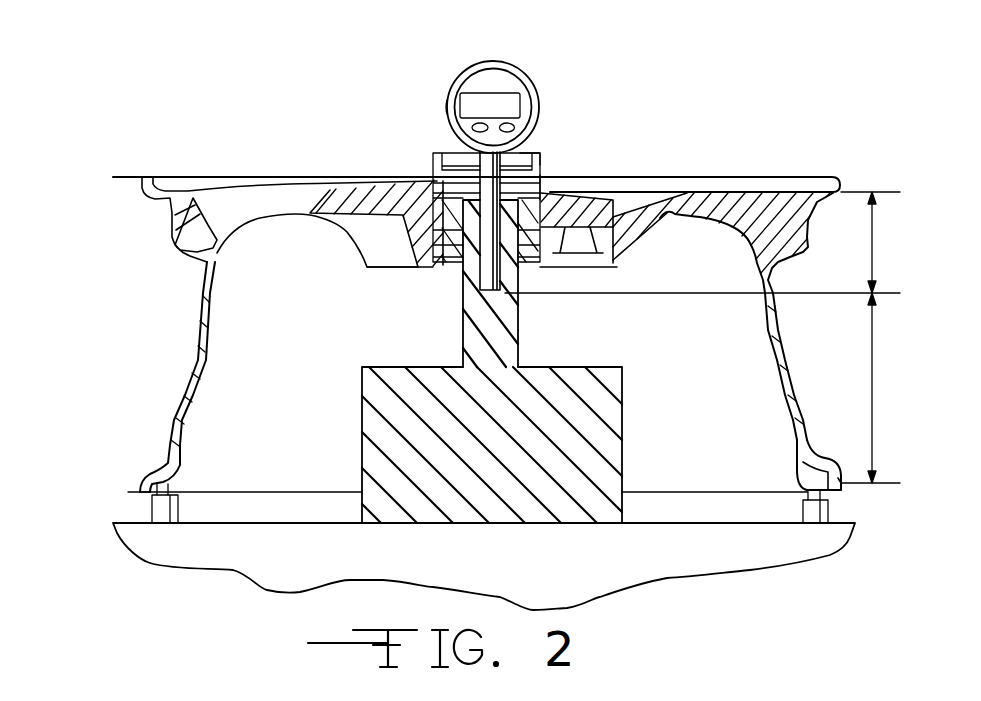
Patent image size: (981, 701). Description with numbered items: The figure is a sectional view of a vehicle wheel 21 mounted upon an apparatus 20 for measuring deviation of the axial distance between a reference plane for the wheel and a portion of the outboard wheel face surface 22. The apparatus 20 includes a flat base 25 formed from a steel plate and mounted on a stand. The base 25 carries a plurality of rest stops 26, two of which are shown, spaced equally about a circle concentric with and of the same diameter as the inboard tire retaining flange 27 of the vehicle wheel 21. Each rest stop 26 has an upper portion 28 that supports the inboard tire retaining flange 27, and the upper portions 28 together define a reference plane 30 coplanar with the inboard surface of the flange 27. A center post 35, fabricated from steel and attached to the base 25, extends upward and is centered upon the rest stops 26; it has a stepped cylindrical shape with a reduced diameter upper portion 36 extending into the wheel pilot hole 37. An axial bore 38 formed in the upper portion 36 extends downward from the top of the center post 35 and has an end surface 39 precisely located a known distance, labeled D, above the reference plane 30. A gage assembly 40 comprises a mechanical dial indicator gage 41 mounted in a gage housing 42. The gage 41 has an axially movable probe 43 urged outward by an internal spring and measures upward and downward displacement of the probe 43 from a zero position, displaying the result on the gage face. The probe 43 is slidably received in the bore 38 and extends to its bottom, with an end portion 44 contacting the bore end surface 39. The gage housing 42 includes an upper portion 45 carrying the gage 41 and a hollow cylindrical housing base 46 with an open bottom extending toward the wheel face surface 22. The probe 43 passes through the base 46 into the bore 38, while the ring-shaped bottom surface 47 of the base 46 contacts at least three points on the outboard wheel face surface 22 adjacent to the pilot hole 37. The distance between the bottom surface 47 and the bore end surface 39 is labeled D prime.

The apparatus 20 is at (624, 69).
The vehicle wheel 21 is at (454, 305).
The outboard wheel face surface 22 is at (655, 177).
The base 25 is at (585, 575).
The rest stops 26 is at (157, 510).
The inboard tire retaining flange 27 is at (163, 463).
The upper portion 28 is at (173, 480).
The reference plane 30 is at (850, 477).
The center post 35 is at (362, 418).
The upper portion 36 is at (490, 283).
The pilot hole 37 is at (438, 271).
The axial bore 38 is at (473, 270).
The end surface 39 is at (490, 293).
The gage assembly 40 is at (462, 167).
The dial indicator gage 41 is at (490, 68).
The gage housing 42 is at (444, 117).
The probe 43 is at (488, 167).
The end portion 44 is at (502, 275).
The upper portion 45 is at (538, 98).
The housing base 46 is at (540, 170).
The bottom surface 47 is at (540, 186).